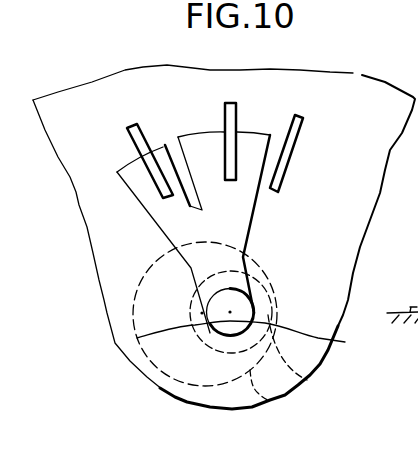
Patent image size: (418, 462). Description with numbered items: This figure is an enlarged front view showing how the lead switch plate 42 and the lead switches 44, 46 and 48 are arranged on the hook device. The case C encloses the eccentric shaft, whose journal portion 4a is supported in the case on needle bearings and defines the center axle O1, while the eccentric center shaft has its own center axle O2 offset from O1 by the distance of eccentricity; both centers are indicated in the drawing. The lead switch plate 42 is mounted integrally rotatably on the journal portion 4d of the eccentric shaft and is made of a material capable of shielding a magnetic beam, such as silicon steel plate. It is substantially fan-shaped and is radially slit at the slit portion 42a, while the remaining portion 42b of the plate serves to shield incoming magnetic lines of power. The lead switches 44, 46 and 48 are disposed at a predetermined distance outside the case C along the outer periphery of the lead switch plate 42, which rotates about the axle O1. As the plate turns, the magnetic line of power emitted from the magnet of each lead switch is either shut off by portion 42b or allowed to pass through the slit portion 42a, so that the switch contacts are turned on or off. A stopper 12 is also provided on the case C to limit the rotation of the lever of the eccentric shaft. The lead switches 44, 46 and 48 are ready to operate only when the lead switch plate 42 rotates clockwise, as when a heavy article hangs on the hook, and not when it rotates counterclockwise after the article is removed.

The case C is at (106, 297).
The journal portion 4a is at (305, 376).
The journal portion 4d is at (254, 337).
The stopper 12 is at (272, 398).
The center axle of the center shaft O2 is at (202, 313).
The center axle of the journal portion O1 is at (230, 312).
The lead switch plate 42 is at (141, 216).
The slit portion 42a is at (176, 143).
The other portion of the lead switch plate 42b is at (247, 219).
The lead switch 44 is at (127, 128).
The lead switch 46 is at (237, 113).
The lead switch 48 is at (304, 123).